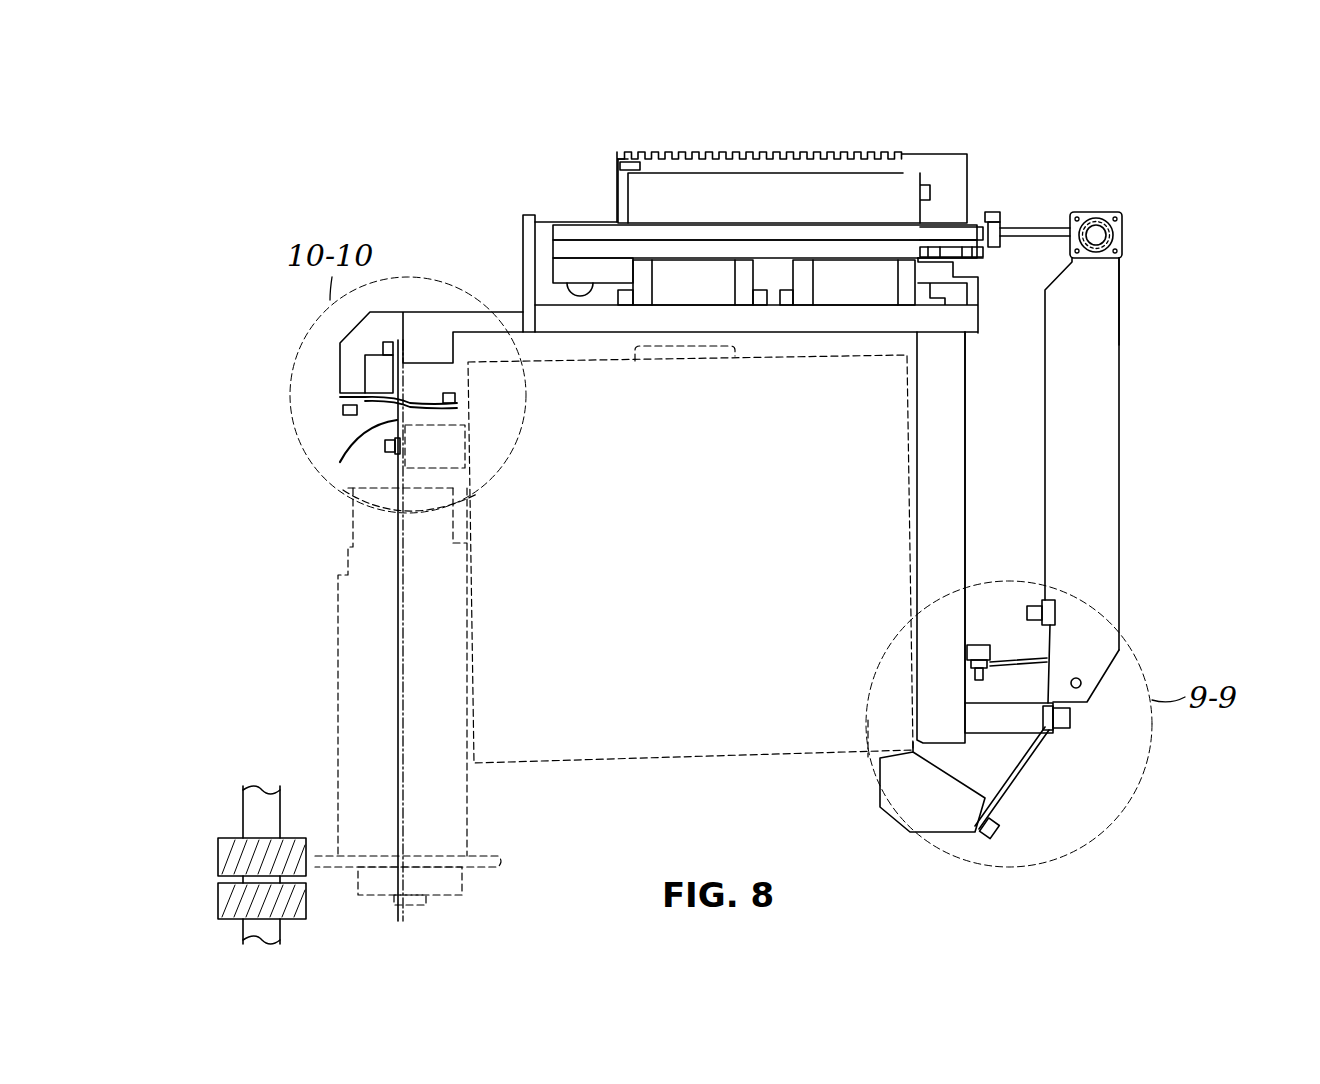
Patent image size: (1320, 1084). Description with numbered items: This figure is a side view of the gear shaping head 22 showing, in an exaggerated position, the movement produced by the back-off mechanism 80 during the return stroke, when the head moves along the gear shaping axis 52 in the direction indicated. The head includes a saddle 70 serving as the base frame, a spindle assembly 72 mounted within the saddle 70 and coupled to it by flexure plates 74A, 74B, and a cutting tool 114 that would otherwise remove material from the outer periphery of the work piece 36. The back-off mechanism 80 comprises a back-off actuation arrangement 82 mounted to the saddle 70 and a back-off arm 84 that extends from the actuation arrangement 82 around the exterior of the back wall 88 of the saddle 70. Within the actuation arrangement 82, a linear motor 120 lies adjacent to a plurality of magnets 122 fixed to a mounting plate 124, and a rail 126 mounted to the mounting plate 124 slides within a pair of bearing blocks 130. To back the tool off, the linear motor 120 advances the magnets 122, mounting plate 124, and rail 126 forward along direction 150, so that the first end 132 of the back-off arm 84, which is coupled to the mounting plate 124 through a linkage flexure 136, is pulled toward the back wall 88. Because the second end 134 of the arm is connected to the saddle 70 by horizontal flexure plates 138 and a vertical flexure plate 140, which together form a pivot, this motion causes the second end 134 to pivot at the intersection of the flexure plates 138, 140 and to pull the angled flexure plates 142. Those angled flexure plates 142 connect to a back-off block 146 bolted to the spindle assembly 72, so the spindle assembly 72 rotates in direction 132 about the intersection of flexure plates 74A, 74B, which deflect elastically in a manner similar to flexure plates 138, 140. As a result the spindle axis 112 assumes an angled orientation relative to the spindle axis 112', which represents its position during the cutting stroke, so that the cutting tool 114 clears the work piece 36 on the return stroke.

The gear shaping head 22 is at (200, 492).
The work piece 36 is at (240, 810).
The gear shaping axis 52 is at (283, 150).
The saddle 70 is at (965, 462).
The spindle assembly 72 is at (766, 752).
The flexure plate 74A is at (343, 454).
The flexure plate 74B is at (377, 397).
The back-off mechanism 80 is at (1225, 252).
The back-off actuation arrangement 82 is at (485, 228).
The back-off arm 84 is at (1119, 465).
The back wall 88 is at (930, 432).
The spindle axis 112 is at (444, 630).
The spindle axis 112' is at (331, 603).
The cutting tool 114 is at (498, 863).
The linear motor 120 is at (905, 183).
The magnets 122 is at (920, 238).
The mounting plate 124 is at (917, 248).
The rail 126 is at (600, 275).
The bearing blocks 130 is at (697, 285).
The first end 132 is at (1119, 345).
The second end 134 is at (1119, 588).
The linkage flexure 136 is at (1033, 240).
The horizontal flexure plates 138 is at (980, 648).
The vertical flexure plate 140 is at (1055, 650).
The angled flexure plates 142 is at (1012, 780).
The back-off block 146 is at (948, 835).
The direction 150 is at (700, 122).